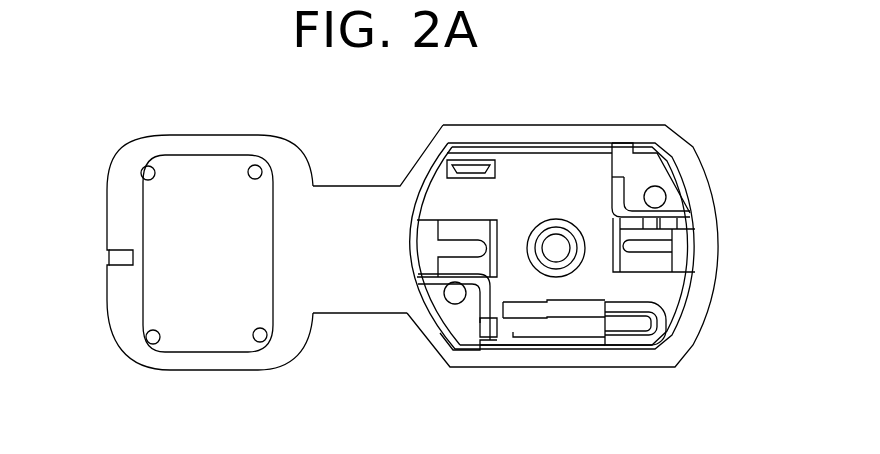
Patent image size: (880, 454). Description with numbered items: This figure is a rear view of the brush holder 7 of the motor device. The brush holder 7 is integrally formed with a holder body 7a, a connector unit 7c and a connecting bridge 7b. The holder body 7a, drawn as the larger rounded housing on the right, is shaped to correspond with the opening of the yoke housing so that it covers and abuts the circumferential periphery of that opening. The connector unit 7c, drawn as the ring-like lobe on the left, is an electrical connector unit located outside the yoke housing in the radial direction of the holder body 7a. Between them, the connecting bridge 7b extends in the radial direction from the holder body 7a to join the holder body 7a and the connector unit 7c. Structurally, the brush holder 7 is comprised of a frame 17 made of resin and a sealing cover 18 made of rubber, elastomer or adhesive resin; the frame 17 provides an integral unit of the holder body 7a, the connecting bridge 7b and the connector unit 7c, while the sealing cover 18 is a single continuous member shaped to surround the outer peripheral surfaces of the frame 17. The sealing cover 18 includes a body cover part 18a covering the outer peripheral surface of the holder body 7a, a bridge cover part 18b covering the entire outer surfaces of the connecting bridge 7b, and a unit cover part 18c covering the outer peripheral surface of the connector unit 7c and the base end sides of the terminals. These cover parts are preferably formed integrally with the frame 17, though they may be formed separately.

The brush holder 7 is at (679, 104).
The holder body 7a is at (703, 177).
The connecting bridge 7b is at (358, 197).
The connector unit 7c is at (110, 203).
The frame 17 is at (693, 296).
The sealing cover 18 is at (622, 350).
The body cover part 18a is at (713, 245).
The bridge cover part 18b is at (353, 303).
The unit cover part 18c is at (210, 338).